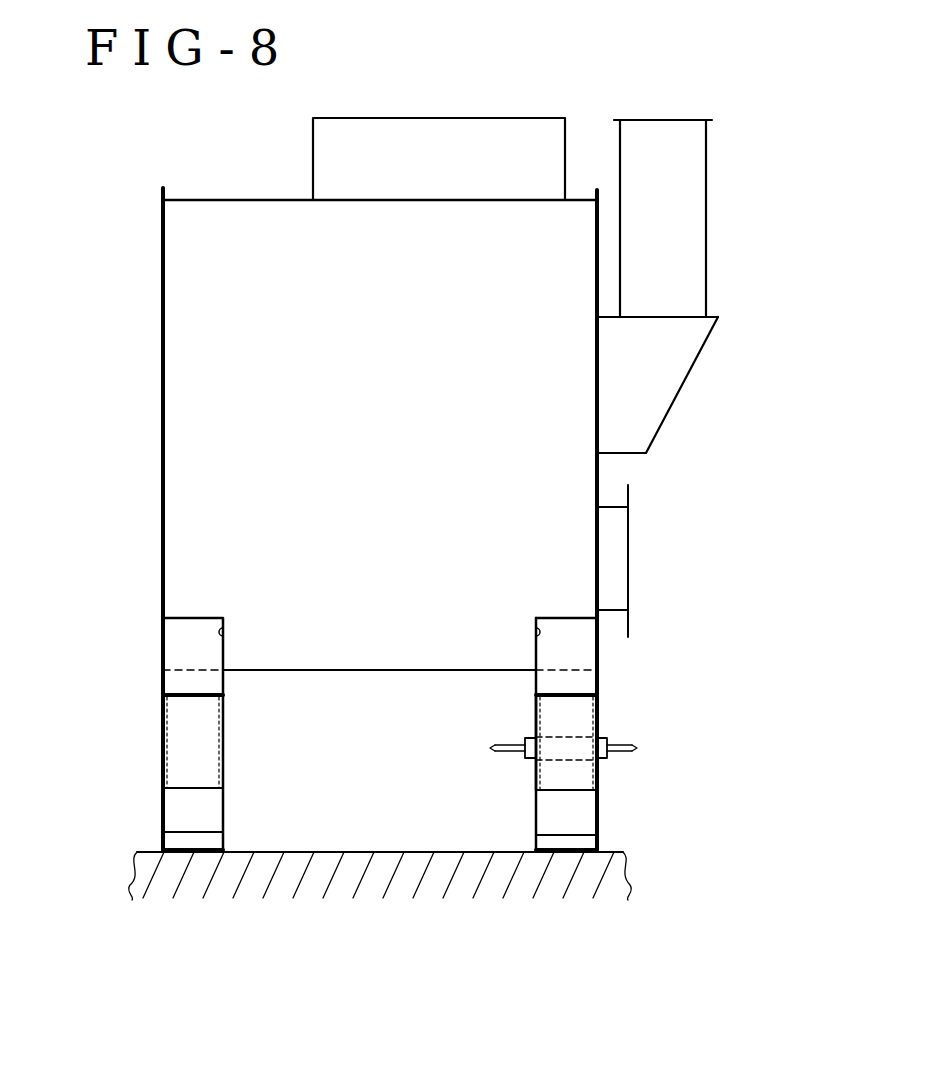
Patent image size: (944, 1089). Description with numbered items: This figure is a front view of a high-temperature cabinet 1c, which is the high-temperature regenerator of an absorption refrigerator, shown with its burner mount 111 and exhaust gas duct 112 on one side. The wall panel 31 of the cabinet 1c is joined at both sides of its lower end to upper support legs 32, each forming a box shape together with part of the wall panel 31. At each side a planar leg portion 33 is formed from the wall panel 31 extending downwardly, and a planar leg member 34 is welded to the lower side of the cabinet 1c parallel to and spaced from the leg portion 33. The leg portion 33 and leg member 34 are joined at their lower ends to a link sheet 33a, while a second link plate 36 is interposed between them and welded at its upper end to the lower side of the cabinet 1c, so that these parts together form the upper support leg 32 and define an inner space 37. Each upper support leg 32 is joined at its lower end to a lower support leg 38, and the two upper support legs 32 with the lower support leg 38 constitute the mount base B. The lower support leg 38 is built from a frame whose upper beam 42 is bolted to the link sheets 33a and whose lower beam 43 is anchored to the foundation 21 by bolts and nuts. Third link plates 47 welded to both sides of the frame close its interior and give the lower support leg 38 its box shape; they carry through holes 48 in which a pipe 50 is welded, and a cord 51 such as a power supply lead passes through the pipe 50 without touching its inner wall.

The high-temperature cabinet 1c is at (235, 200).
The exhaust gas duct 112 is at (706, 235).
The burner mount 111 is at (628, 520).
The wall panel 31 is at (162, 460).
The inner space 37 is at (200, 625).
The planar leg member 34 is at (225, 632).
The planar leg portion 33 is at (163, 625).
The upper support leg 32 is at (178, 672).
The link sheet 33a is at (175, 695).
The second link plate 36 is at (224, 672).
The upper beam 42 is at (160, 700).
The third link plate 47 is at (163, 763).
The through hole 48 is at (536, 770).
The pipe 50 is at (530, 740).
The cord 51 is at (520, 755).
The lower support leg 38 is at (163, 818).
The lower beam 43 is at (160, 842).
The foundation 21 is at (345, 870).
The mount base B is at (117, 711).